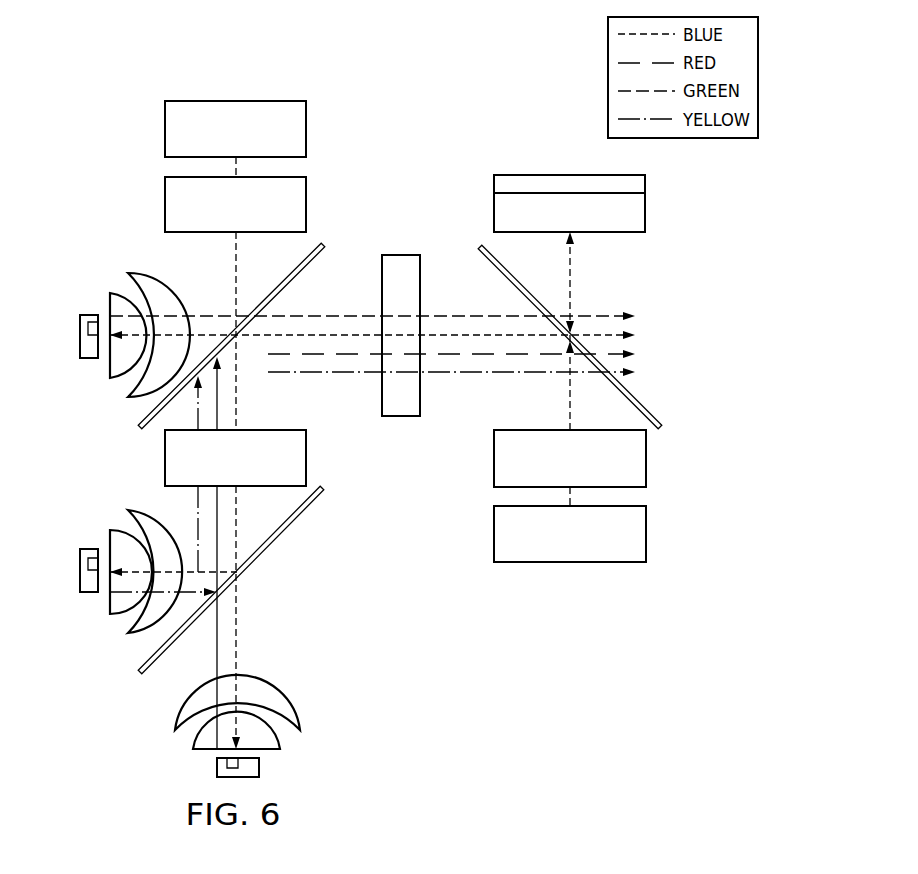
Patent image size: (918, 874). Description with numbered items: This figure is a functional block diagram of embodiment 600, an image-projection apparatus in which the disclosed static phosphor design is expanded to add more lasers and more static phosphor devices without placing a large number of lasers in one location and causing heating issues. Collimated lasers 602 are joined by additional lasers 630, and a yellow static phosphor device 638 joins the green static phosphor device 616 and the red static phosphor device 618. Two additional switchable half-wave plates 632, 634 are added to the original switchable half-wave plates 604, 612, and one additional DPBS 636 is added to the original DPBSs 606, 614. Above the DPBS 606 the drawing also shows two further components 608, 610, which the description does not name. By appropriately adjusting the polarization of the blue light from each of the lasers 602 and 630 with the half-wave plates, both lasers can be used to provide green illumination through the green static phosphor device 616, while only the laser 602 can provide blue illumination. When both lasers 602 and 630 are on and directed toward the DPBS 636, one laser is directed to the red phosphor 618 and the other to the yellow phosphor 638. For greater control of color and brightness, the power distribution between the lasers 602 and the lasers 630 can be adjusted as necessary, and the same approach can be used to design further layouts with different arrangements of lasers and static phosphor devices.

The embodiment 600 is at (497, 99).
The collimated lasers 602 is at (646, 532).
The switchable half-wave plate 604 is at (646, 457).
The DPBS 606 is at (678, 405).
The quarter waveplate 608 is at (640, 213).
The reflective element 610 is at (640, 185).
The switchable half-wave plate 612 is at (394, 255).
The DPBS 614 is at (299, 270).
The green static phosphor device 616 is at (80, 334).
The red static phosphor device 618 is at (217, 767).
The additional lasers 630 is at (165, 132).
The switchable half-wave plate 632 is at (165, 207).
The switchable half-wave plate 634 is at (165, 458).
The DPBS 636 is at (289, 527).
The yellow static phosphor device 638 is at (80, 570).